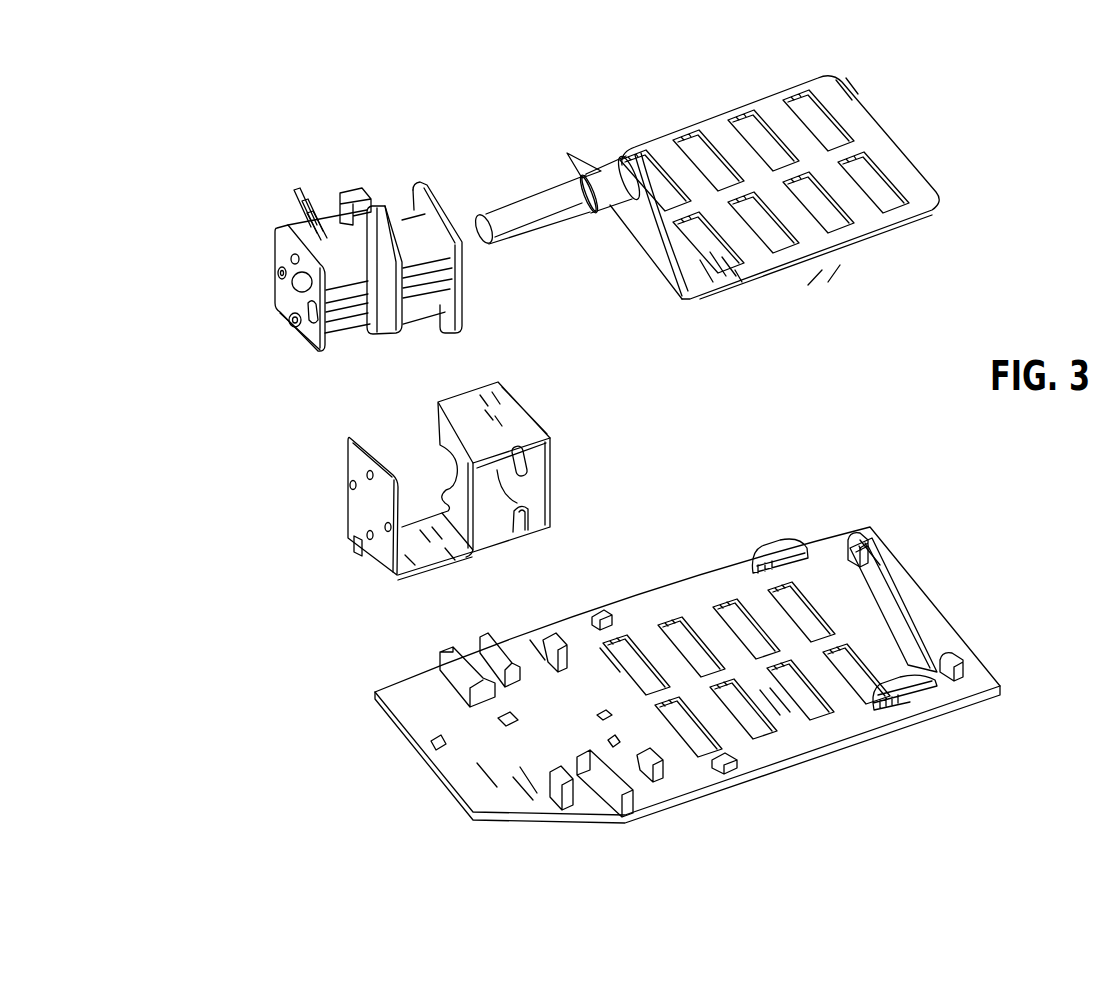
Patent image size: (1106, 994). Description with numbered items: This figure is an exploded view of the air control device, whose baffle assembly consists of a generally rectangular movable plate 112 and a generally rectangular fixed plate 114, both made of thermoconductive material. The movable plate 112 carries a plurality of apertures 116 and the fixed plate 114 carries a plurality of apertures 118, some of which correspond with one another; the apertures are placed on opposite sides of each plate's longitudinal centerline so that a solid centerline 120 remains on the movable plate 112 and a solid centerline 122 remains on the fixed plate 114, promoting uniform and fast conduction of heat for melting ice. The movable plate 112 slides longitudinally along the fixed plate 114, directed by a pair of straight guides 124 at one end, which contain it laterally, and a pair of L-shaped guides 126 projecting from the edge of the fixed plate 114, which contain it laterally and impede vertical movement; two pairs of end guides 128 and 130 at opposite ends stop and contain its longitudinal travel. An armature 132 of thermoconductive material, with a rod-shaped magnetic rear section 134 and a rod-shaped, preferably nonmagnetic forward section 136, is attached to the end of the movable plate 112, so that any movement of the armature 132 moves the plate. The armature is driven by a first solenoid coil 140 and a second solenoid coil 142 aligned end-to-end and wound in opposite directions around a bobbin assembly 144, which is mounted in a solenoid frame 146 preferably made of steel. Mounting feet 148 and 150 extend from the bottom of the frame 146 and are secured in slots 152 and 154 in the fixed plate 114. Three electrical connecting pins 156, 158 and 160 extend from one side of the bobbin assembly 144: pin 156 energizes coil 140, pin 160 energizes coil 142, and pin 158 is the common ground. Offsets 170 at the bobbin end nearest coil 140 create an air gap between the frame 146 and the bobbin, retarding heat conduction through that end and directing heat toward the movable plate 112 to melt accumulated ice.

The movable plate 112 is at (880, 105).
The fixed plate 114 is at (928, 572).
The movable plate apertures 116 is at (797, 100).
The fixed plate apertures 118 is at (627, 640).
The solid centerline 120 is at (850, 152).
The solid centerline 122 is at (709, 688).
The straight guides 124 is at (606, 613).
The guides 126 is at (774, 555).
The end guides 128 is at (858, 536).
The end guides 130 is at (545, 638).
The armature 132 is at (546, 167).
The rear section 134 is at (497, 215).
The forward section 136 is at (604, 175).
The first solenoid coil 140 is at (365, 288).
The second solenoid coil 142 is at (424, 284).
The bobbin assembly 144 is at (352, 190).
The solenoid frame 146 is at (527, 397).
The mounting foot 148 is at (358, 548).
The mounting foot 150 is at (520, 516).
The slot 152 is at (432, 742).
The slot 154 is at (600, 710).
The electrical connecting pin 156 is at (307, 228).
The electrical connecting pin 158 is at (300, 222).
The electrical connecting pin 160 is at (297, 186).
The offsets 170 is at (290, 322).